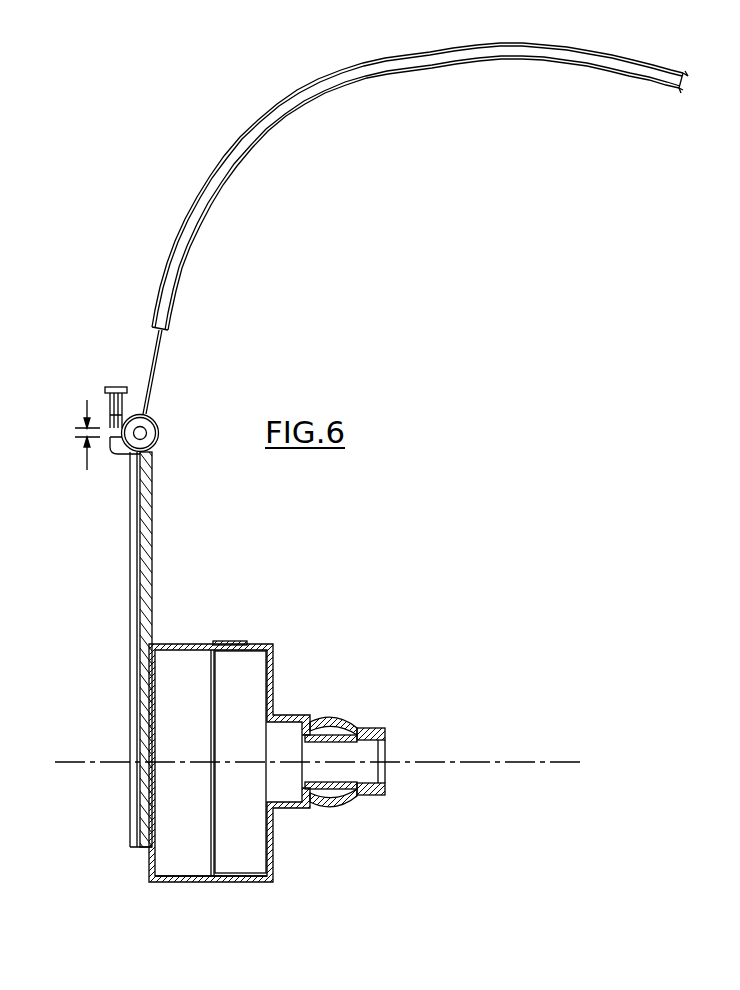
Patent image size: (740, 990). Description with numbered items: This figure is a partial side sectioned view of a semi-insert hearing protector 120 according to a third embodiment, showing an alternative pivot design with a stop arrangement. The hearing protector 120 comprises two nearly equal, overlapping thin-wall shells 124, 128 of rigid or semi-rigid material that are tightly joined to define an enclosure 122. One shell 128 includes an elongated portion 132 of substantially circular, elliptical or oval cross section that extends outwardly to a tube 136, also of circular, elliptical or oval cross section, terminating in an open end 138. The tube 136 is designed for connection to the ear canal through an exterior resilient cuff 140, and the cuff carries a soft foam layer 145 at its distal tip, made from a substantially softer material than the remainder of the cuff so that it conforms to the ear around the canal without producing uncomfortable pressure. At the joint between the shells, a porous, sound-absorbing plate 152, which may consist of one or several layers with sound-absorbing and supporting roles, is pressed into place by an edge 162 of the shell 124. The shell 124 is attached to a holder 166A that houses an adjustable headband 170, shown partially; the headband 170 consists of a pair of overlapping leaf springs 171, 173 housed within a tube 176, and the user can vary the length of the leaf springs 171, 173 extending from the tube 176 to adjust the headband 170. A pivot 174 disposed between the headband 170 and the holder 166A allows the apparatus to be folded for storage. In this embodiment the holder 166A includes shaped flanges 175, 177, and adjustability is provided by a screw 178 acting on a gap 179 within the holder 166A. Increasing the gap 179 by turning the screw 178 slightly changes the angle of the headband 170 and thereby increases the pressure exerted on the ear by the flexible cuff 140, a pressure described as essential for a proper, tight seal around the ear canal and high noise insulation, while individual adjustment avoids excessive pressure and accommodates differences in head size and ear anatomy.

The hearing protector 120 is at (370, 889).
The enclosure 122 is at (163, 857).
The shell 124 is at (187, 883).
The shell 128 is at (273, 668).
The elongated portion 132 is at (302, 714).
The tube 136 is at (352, 731).
The open end of tube 138 is at (364, 757).
The exterior resilient cuff 140 is at (337, 804).
The soft foam layer 145 is at (383, 777).
The porous sound-absorbing plate 152 is at (212, 810).
The edge 162 is at (234, 641).
The holder 166A is at (148, 520).
The adjustable headband 170 is at (222, 269).
The leaf spring 171 is at (214, 196).
The leaf spring 173 is at (664, 84).
The pivot 174 is at (158, 418).
The flange 175 is at (124, 456).
The tube 176 is at (368, 88).
The flange 177 is at (142, 397).
The screw 178 is at (115, 387).
The gap 179 is at (74, 438).